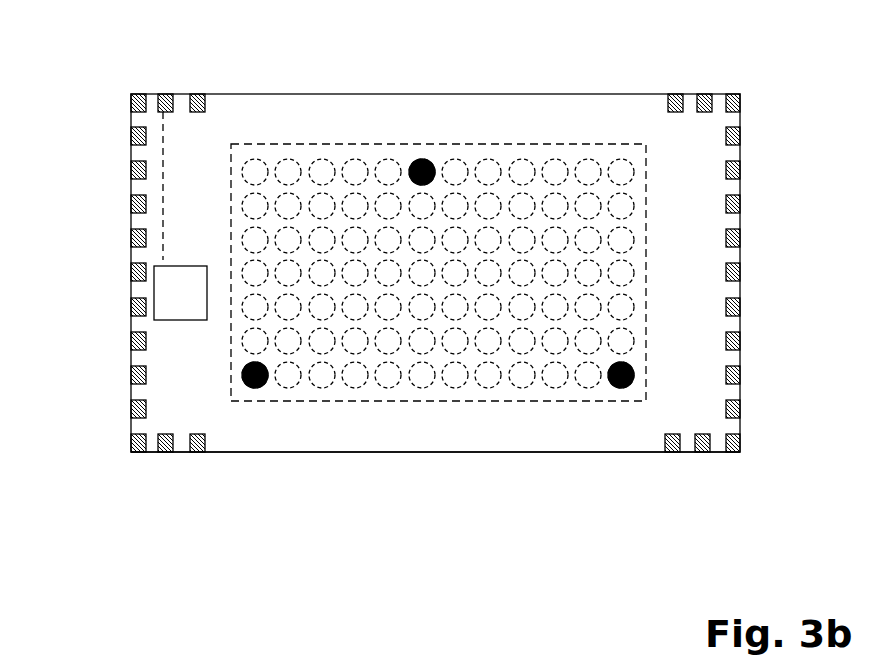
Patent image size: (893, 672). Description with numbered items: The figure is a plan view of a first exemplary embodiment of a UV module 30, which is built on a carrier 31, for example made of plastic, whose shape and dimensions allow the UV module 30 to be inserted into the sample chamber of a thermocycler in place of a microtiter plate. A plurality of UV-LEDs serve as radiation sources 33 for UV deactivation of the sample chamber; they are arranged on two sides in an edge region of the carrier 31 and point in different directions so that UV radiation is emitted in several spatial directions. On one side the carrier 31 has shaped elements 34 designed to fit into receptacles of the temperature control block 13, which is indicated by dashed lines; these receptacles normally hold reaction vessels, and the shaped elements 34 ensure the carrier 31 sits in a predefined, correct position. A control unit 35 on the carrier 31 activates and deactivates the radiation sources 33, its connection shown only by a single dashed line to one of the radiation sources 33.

The temperature control block 13 is at (646, 203).
The UV module 30 is at (762, 243).
The carrier 31 is at (403, 425).
The radiation sources 33 is at (132, 127).
The shaped elements 34 is at (423, 172).
The control unit 35 is at (162, 305).